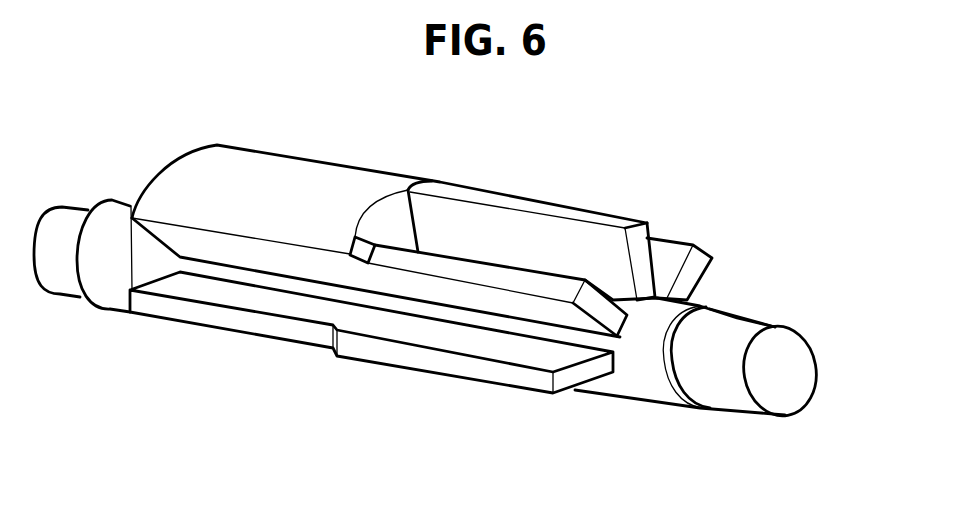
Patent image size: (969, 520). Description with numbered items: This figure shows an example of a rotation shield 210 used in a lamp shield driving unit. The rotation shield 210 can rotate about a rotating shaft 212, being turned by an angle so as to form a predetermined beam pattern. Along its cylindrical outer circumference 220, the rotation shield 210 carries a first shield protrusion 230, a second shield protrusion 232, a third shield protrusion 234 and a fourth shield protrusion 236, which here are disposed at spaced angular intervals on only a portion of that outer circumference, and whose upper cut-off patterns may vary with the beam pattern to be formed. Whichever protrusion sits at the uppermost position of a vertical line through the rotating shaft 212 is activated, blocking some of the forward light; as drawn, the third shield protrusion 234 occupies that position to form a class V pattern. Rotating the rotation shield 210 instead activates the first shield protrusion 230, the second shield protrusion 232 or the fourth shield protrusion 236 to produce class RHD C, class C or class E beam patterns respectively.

The rotation shield 210 is at (502, 412).
The rotating shaft 212 is at (790, 375).
The cylindrical outer circumference 220 is at (635, 360).
The first shield protrusion 230 is at (393, 363).
The second shield protrusion 232 is at (473, 263).
The third shield protrusion 234 is at (575, 210).
The fourth shield protrusion 236 is at (673, 233).